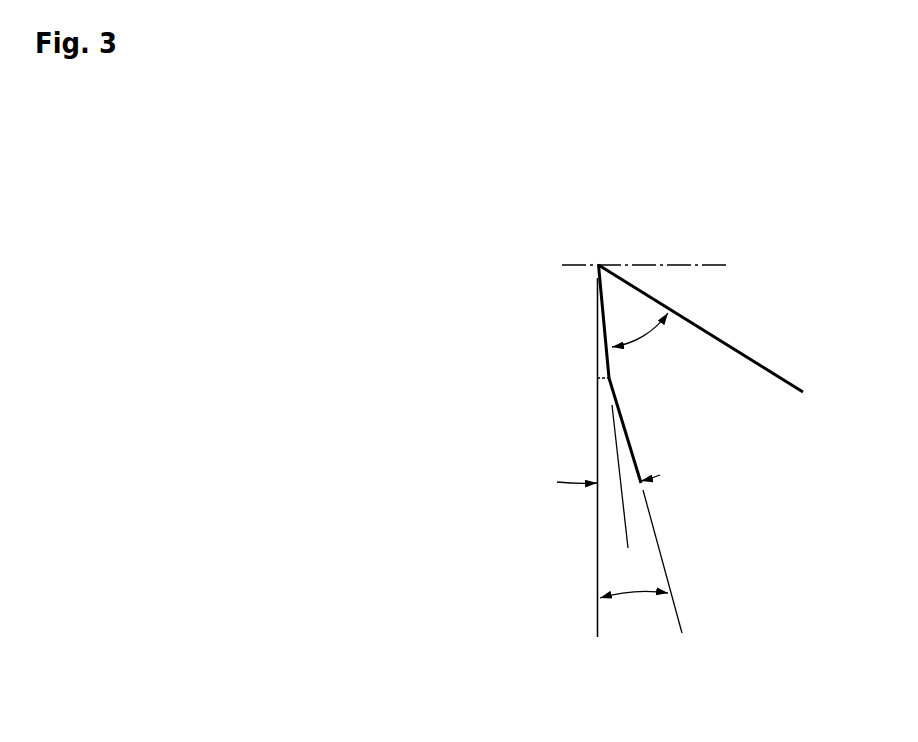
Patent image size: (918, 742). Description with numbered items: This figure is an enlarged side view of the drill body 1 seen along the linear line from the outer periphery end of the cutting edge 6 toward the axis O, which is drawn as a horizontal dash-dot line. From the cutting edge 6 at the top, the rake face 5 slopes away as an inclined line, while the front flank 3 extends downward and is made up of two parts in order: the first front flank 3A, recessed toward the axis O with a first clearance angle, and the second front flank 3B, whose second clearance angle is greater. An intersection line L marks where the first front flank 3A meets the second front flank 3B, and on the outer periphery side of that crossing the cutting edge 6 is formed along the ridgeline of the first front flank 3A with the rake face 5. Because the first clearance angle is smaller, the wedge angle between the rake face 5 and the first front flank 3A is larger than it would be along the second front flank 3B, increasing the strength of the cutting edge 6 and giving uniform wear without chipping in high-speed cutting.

The drill body 1 is at (567, 540).
The front flank 3 is at (552, 449).
The first front flank 3A is at (605, 330).
The second front flank 3B is at (630, 450).
The rake face 5 is at (740, 352).
The cutting edge 6 is at (598, 263).
The axis O is at (685, 265).
The intersection line L is at (608, 378).